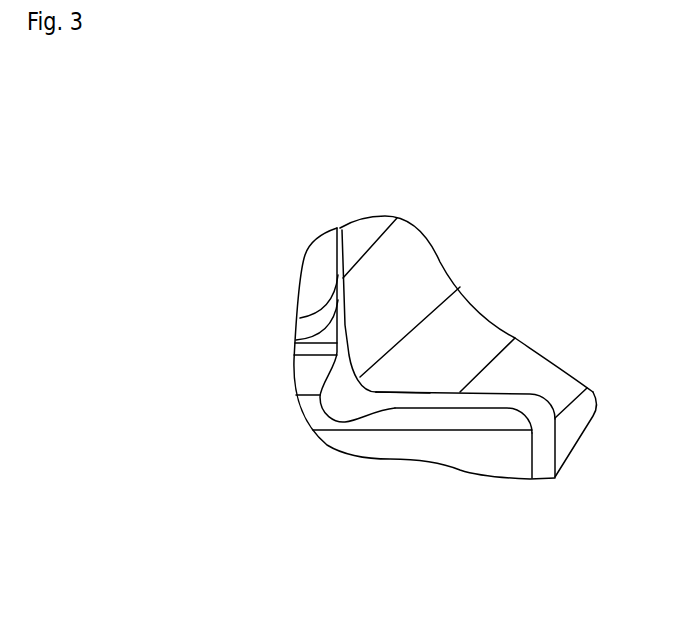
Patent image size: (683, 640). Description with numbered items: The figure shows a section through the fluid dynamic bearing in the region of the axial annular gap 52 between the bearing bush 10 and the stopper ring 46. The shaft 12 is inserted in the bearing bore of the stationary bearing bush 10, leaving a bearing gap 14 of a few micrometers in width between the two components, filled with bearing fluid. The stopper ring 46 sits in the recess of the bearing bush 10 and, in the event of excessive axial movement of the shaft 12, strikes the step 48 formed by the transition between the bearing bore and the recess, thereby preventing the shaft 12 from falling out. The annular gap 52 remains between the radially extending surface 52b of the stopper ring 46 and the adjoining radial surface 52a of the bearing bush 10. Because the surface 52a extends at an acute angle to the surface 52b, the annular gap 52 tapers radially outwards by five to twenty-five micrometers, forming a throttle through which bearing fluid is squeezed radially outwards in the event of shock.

The bearing bush 10 is at (423, 272).
The shaft 12 is at (323, 258).
The bearing gap 14 is at (341, 242).
The stopper ring 46 is at (487, 450).
The step 48 is at (386, 394).
The axial annular gap 52 is at (497, 351).
The radial surface of the bearing bush 52a is at (485, 397).
The radial surface of the stopper ring 52b is at (495, 408).